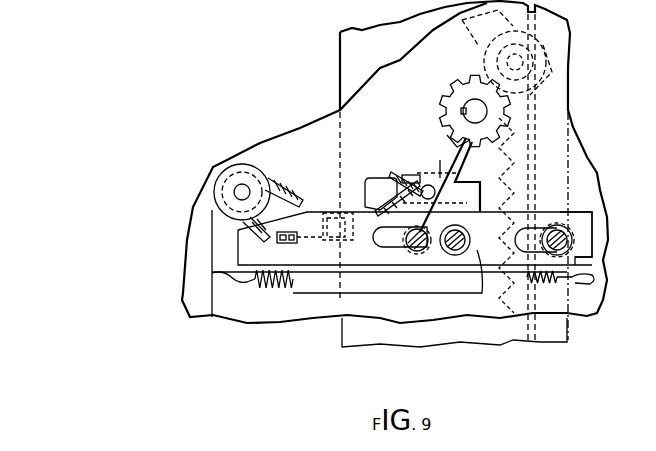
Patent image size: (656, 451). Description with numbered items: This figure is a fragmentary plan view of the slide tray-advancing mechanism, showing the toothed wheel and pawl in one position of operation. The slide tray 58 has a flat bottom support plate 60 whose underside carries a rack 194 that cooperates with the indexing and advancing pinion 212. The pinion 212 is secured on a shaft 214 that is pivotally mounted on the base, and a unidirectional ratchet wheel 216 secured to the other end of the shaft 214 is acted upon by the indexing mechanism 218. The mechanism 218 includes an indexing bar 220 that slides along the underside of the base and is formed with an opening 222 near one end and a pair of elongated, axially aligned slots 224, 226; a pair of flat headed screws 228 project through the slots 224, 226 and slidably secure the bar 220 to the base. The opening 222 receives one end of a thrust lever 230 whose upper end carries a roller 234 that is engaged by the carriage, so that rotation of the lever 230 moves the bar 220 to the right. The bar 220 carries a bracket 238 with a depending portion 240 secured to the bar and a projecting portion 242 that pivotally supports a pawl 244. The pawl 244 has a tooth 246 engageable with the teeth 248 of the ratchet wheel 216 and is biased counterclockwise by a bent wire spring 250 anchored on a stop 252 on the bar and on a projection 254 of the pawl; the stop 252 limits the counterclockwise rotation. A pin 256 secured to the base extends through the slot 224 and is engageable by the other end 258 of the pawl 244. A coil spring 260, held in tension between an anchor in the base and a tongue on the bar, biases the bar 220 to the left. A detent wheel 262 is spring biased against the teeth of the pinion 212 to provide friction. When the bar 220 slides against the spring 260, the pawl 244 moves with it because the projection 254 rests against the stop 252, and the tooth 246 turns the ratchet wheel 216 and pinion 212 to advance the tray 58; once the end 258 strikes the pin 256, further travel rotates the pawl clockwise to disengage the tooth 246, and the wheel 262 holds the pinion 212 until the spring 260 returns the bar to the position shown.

The slide tray 58 is at (340, 85).
The bottom support plate 60 is at (362, 53).
The rack 194 is at (550, 147).
The indexing and advancing pinion 212 is at (440, 100).
The shaft 214 is at (456, 96).
The unidirectional ratchet wheel 216 is at (508, 107).
The indexing mechanism 218 is at (397, 292).
The indexing bar 220 is at (580, 220).
The opening 222 is at (296, 214).
The elongated slot 224 is at (350, 241).
The elongated slot 226 is at (558, 228).
The flat headed screws 228 is at (597, 278).
The thrust lever 230 is at (283, 243).
The roller 234 is at (284, 195).
The bracket 238 is at (418, 170).
The depending portion 240 is at (474, 240).
The projecting portion 242 is at (464, 182).
The pawl 244 is at (437, 170).
The tooth 246 is at (500, 150).
The teeth 248 is at (470, 78).
The bent wire spring 250 is at (389, 176).
The stop 252 is at (338, 158).
The projection 254 is at (367, 183).
The pin 256 is at (482, 280).
The other end 258 is at (404, 252).
The coil spring 260 is at (270, 286).
The detent wheel 262 is at (550, 65).